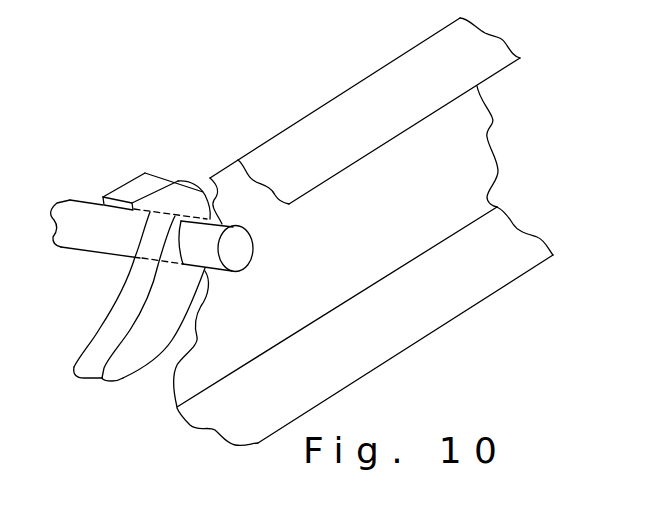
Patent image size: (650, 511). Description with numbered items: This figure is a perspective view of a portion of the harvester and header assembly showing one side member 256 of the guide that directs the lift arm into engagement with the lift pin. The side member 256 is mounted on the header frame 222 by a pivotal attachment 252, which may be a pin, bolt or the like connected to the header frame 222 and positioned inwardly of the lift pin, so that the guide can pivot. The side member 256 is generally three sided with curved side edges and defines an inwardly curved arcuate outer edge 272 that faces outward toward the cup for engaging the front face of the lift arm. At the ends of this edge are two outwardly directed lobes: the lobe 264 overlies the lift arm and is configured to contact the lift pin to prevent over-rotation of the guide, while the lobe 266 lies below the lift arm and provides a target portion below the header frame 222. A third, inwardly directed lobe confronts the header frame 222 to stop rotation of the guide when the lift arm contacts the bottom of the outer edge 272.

The header frame 222 is at (472, 132).
The pivotal attachment 252 is at (243, 252).
The side member 256 is at (185, 197).
The lobe 264 is at (133, 192).
The lobe 266 is at (110, 375).
The arcuate outer edge 272 is at (115, 318).